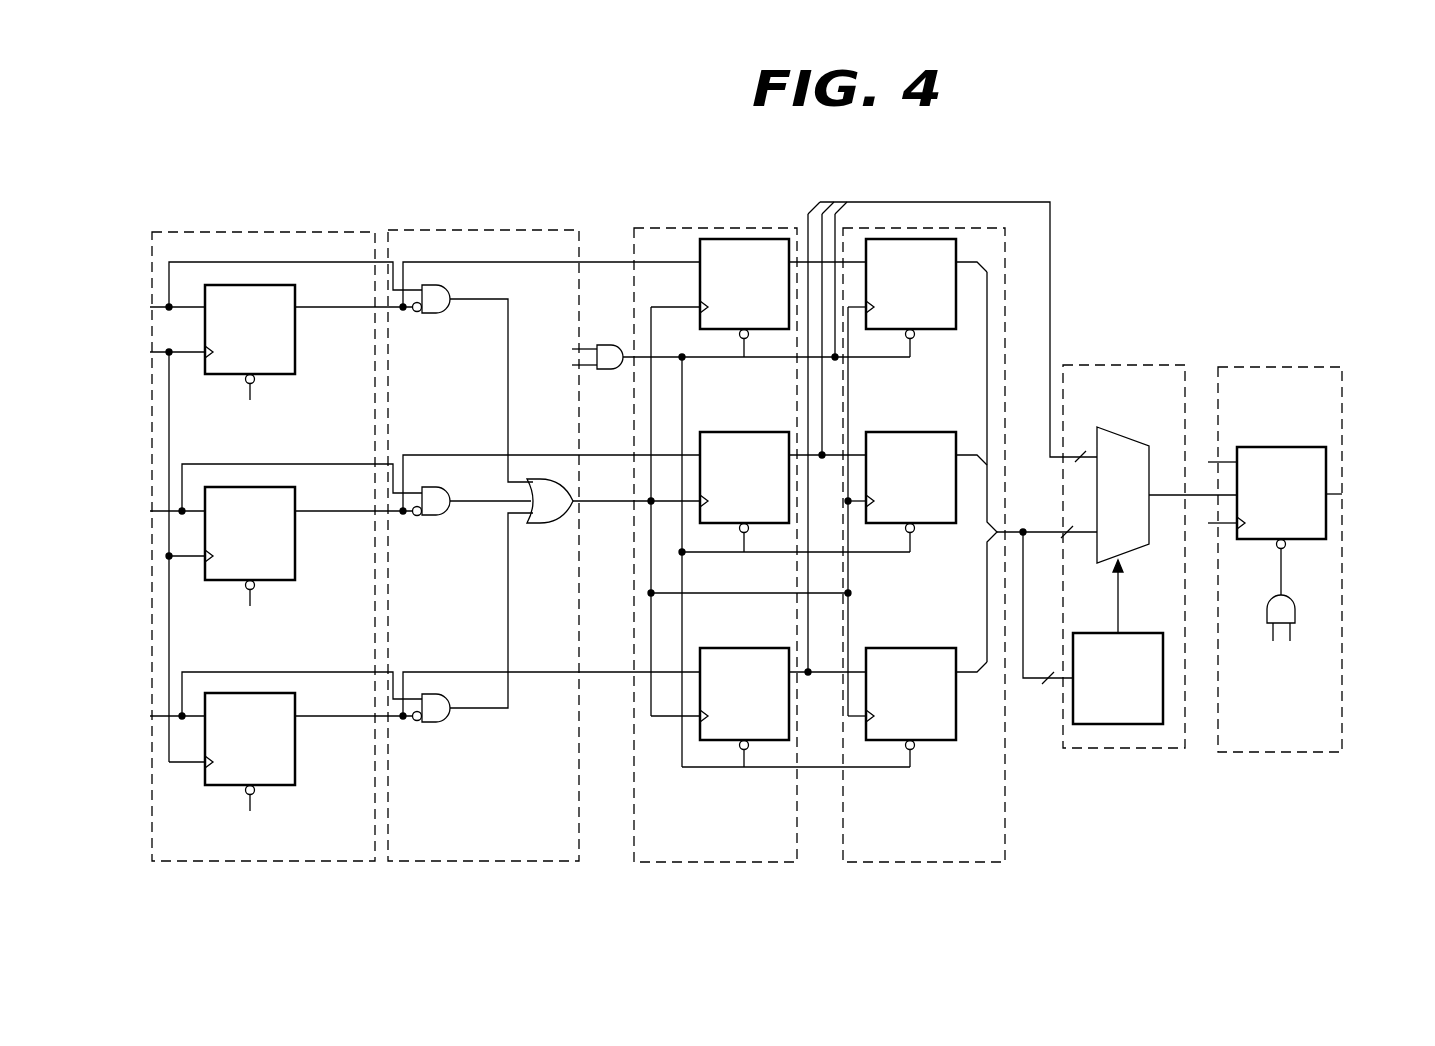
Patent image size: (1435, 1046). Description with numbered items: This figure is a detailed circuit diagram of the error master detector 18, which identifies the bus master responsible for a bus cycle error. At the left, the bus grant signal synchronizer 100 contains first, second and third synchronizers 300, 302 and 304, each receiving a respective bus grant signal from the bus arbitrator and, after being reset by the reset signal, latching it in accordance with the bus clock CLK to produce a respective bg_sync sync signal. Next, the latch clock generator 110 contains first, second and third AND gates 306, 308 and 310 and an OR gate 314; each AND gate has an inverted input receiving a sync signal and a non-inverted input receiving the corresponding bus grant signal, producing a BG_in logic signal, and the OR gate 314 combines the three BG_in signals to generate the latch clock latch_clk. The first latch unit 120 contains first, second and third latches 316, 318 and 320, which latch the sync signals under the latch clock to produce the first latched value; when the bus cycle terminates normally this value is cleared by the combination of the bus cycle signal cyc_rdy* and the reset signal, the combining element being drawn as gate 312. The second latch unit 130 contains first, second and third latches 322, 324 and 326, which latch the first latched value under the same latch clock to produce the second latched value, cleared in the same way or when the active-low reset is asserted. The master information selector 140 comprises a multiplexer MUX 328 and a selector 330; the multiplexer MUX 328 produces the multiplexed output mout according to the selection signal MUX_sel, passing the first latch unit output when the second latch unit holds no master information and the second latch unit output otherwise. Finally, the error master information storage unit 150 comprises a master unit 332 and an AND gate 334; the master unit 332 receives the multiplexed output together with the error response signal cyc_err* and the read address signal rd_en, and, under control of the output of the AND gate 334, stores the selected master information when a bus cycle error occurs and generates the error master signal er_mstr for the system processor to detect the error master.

The error master detector 18 is at (1176, 156).
The bus grant signal synchronizer 100 is at (252, 232).
The latch clock generator 110 is at (473, 232).
The first latch unit 120 is at (683, 228).
The second latch unit 130 is at (922, 228).
The master information selector 140 is at (1126, 365).
The error master information storage unit 150 is at (1267, 367).
The first synchronizer 300 is at (295, 352).
The second synchronizer 302 is at (295, 567).
The third synchronizer 304 is at (295, 762).
The first AND gate 306 is at (431, 313).
The second AND gate 308 is at (430, 515).
The third AND gate 310 is at (430, 722).
The AND gate 312 is at (607, 369).
The OR gate 314 is at (533, 523).
The first latch 316 is at (700, 276).
The second latch 318 is at (727, 432).
The third latch 320 is at (740, 648).
The first latch 322 is at (957, 249).
The second latch 324 is at (908, 432).
The third latch 326 is at (918, 648).
The multiplexer MUX 328 is at (1113, 428).
The selector 330 is at (1073, 710).
The master unit 332 is at (1286, 447).
The AND gate 334 is at (1296, 612).